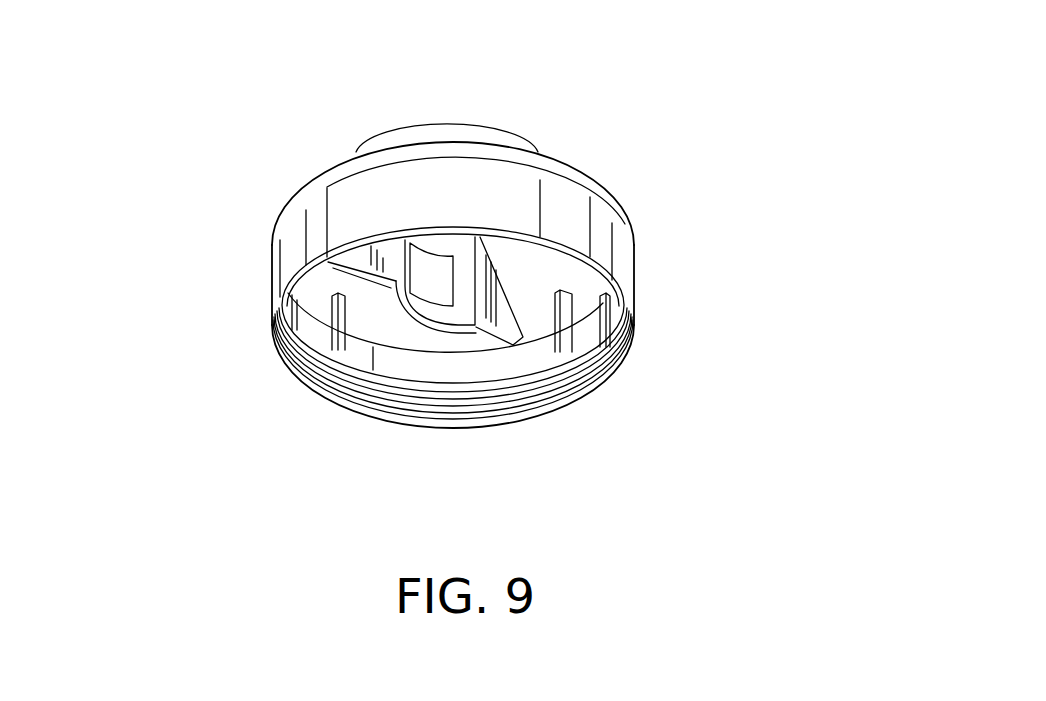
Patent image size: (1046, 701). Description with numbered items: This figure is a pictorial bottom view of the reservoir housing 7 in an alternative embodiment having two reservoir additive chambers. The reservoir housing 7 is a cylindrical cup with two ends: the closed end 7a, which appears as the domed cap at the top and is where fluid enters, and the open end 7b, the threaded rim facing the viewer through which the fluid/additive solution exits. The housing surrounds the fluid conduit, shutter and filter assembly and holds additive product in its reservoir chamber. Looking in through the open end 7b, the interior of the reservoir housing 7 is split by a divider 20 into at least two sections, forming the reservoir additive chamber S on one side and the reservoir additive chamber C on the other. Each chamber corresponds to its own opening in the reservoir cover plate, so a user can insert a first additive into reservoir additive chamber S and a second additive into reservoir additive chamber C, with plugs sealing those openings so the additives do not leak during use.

The reservoir housing 7 is at (570, 170).
The closed end 7a is at (505, 125).
The open end 7b is at (272, 348).
The reservoir additive chamber S is at (548, 268).
The reservoir additive chamber C is at (435, 342).
The divider 20 is at (517, 335).